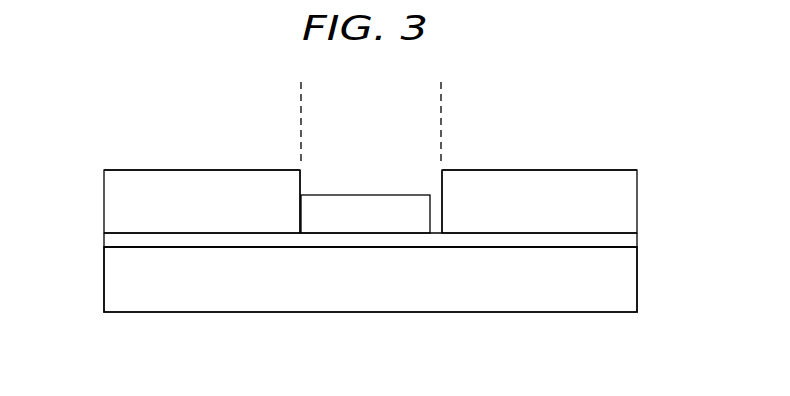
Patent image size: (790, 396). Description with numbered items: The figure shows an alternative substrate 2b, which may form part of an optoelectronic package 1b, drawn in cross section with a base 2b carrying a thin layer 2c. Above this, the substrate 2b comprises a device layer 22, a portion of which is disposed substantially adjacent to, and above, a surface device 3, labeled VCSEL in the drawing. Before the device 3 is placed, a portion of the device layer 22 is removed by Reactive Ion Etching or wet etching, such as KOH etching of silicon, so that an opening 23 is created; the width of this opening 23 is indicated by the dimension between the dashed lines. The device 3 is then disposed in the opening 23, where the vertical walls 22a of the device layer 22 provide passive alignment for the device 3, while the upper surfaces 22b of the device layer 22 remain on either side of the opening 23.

The optical module 1b is at (573, 99).
The substrate 2b is at (638, 276).
The layer on base 2c is at (177, 238).
The surface device 3 is at (372, 195).
The device layer 22 is at (113, 197).
The vertical walls 22a is at (300, 203).
The upper surface of spacer 22b is at (156, 170).
The opening 23 is at (441, 112).